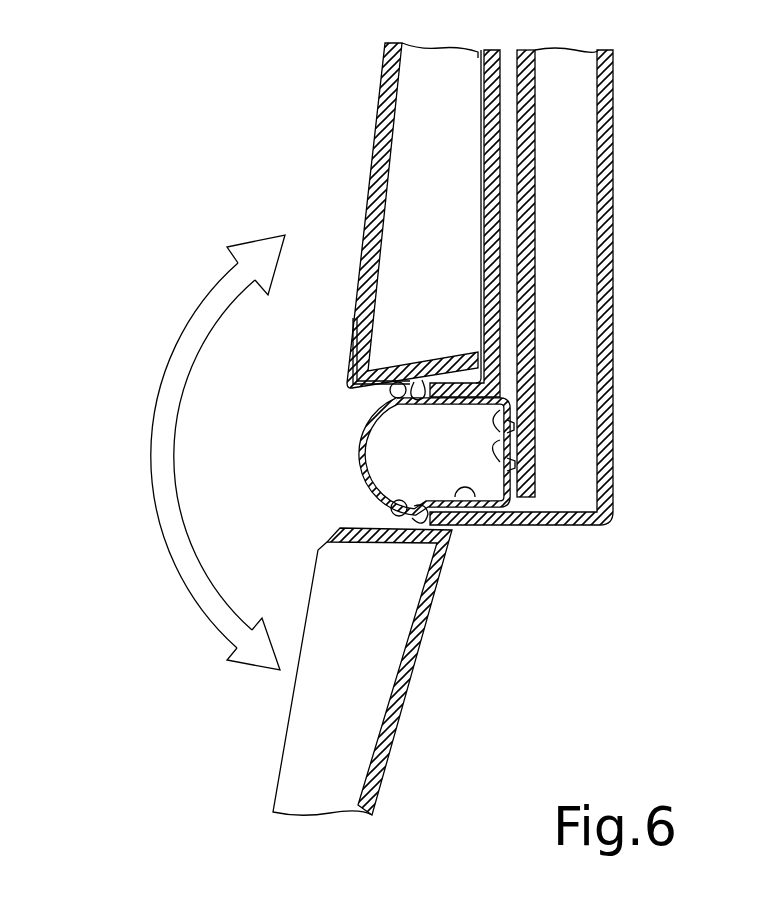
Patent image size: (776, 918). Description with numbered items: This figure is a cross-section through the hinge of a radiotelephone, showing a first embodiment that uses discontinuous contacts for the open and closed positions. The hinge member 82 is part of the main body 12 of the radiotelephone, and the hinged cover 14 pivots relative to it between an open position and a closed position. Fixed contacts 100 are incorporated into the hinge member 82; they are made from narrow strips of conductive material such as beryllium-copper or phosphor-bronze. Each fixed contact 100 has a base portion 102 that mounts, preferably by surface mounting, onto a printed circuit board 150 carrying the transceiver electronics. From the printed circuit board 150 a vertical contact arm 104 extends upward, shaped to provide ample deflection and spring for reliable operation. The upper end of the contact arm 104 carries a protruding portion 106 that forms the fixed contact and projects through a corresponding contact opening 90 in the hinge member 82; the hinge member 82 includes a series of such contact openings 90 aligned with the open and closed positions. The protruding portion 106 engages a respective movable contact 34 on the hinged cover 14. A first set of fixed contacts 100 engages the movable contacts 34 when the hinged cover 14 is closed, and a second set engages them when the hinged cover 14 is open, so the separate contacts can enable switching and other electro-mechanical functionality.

The main body 12 is at (640, 243).
The hinged cover 14 is at (432, 688).
The movable contact 34 is at (356, 362).
The hinge member 82 is at (343, 428).
The contact opening 90 is at (422, 378).
The fixed contact 100 is at (447, 420).
The base portion 102 is at (533, 432).
The vertical contact arm 104 is at (530, 420).
The protruding portion 106 is at (402, 383).
The printed circuit board 150 is at (527, 172).